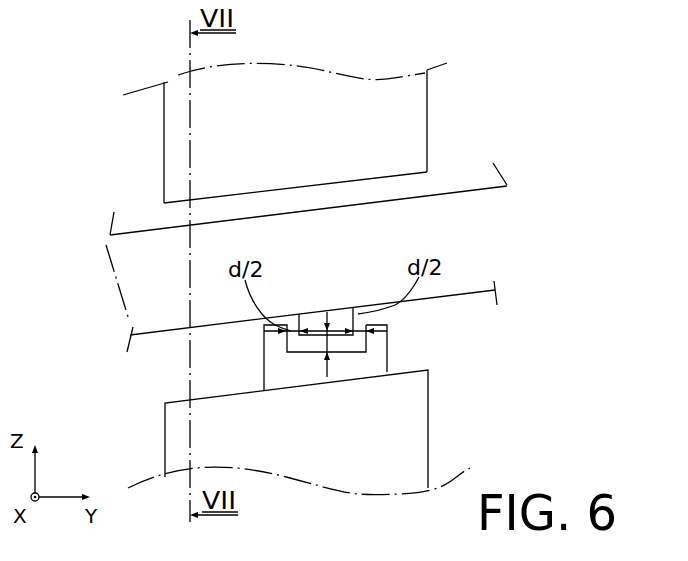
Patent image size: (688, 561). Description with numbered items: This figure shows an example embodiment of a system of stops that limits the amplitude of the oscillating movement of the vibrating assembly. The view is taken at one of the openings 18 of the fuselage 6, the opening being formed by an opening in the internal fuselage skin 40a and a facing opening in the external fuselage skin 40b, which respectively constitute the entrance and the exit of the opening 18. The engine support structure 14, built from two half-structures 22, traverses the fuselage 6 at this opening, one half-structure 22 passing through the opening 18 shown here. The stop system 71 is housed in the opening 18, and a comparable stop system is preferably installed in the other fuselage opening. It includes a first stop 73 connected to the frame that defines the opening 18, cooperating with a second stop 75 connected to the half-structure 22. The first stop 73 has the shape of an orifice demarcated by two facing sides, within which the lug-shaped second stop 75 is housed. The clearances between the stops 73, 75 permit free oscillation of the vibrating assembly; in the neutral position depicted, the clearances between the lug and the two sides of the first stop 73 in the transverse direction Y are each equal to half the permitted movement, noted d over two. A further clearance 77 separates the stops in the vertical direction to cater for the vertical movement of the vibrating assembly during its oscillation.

The fuselage 6 is at (436, 88).
The internal fuselage skin 40a is at (164, 142).
The external fuselage skin 40b is at (427, 137).
The opening 18 is at (410, 187).
The half-structure 22 is at (480, 302).
The support structure 14 is at (566, 364).
The stop system 71 is at (240, 363).
The first stop 73 is at (387, 358).
The second stop 75 is at (312, 316).
The clearance 77 is at (328, 343).